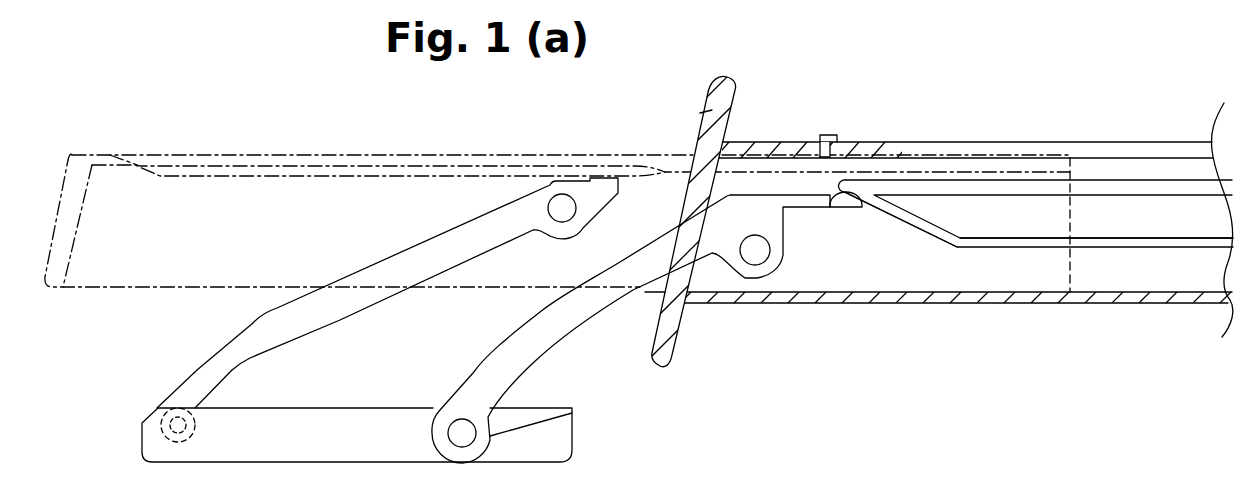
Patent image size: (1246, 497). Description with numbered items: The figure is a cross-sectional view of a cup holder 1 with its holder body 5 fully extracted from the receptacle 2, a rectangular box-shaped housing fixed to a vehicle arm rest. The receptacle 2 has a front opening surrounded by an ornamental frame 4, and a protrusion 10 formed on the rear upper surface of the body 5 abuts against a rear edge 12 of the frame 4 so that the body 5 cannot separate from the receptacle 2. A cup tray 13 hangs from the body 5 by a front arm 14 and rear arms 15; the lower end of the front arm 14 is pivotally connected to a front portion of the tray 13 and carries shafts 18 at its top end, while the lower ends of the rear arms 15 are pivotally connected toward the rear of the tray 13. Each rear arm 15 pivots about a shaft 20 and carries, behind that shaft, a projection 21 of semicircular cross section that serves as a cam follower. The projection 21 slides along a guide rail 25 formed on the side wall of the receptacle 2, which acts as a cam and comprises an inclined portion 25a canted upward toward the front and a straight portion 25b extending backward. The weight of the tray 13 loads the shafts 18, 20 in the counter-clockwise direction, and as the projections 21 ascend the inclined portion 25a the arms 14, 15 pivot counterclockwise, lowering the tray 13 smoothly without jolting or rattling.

The cup holder 1 is at (378, 132).
The receptacle 2 is at (735, 97).
The ornamental frame 4 is at (700, 113).
The holder body 5 is at (249, 155).
The protrusion 10 is at (846, 140).
The rear edge 12 is at (830, 134).
The cup tray 13 is at (573, 438).
The front arm 14 is at (197, 369).
The rear arm 15 is at (474, 370).
The shaft 18 is at (556, 196).
The shaft 20 is at (760, 264).
The projection 21 is at (847, 209).
The guide rail 25 is at (993, 248).
The inclined portion 25a is at (902, 222).
The straight portion 25b is at (1141, 248).